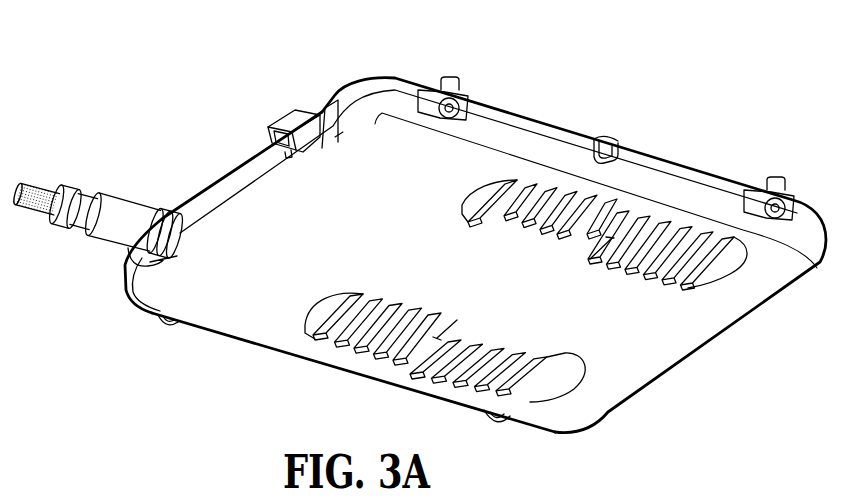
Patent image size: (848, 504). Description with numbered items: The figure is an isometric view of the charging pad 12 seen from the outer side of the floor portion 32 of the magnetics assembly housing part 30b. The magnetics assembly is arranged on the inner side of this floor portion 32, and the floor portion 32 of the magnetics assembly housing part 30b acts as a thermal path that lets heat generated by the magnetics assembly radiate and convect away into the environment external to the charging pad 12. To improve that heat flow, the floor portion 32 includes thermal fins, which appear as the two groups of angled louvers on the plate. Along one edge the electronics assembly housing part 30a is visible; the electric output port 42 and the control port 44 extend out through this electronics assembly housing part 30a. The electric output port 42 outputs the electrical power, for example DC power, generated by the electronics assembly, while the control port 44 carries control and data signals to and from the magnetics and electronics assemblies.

The charging pad 12 is at (632, 84).
The electronics assembly housing part 30a is at (230, 170).
The magnetics assembly housing part 30b is at (356, 384).
The floor portion 32 is at (265, 290).
The electric output port 42 is at (113, 199).
The control port 44 is at (302, 110).